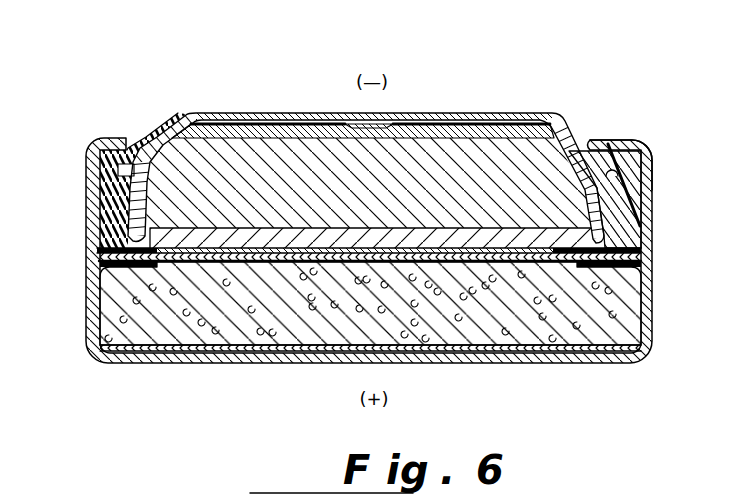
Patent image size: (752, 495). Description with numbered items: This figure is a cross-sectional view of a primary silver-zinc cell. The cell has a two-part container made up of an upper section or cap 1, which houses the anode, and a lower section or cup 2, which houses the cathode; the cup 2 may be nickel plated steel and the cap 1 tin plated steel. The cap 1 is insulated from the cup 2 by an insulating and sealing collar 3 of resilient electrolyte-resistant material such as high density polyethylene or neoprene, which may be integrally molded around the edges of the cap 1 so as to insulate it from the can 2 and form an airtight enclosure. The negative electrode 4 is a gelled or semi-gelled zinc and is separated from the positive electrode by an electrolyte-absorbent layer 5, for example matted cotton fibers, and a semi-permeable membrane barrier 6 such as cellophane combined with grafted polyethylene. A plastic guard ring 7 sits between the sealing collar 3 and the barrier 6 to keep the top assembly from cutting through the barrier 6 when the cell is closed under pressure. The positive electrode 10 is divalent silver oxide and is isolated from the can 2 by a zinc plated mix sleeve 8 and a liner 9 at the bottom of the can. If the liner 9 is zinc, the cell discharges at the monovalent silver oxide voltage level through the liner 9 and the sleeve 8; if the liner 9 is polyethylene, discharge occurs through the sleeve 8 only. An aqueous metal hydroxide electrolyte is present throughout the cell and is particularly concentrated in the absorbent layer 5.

The cap 1 is at (477, 110).
The cup 2 is at (643, 188).
The insulating and sealing collar 3 is at (630, 215).
The negative electrode 4 is at (288, 180).
The electrolyte-absorbent layer 5 is at (227, 242).
The membrane barrier 6 is at (292, 261).
The guard ring 7 is at (625, 252).
The zinc plated mix sleeve 8 is at (643, 305).
The liner 9 is at (503, 351).
The positive electrode 10 is at (156, 300).